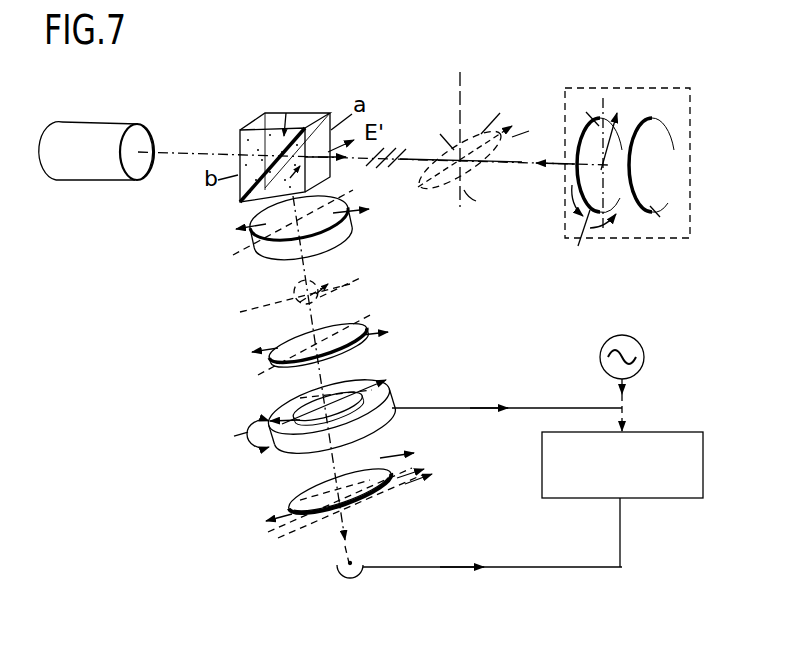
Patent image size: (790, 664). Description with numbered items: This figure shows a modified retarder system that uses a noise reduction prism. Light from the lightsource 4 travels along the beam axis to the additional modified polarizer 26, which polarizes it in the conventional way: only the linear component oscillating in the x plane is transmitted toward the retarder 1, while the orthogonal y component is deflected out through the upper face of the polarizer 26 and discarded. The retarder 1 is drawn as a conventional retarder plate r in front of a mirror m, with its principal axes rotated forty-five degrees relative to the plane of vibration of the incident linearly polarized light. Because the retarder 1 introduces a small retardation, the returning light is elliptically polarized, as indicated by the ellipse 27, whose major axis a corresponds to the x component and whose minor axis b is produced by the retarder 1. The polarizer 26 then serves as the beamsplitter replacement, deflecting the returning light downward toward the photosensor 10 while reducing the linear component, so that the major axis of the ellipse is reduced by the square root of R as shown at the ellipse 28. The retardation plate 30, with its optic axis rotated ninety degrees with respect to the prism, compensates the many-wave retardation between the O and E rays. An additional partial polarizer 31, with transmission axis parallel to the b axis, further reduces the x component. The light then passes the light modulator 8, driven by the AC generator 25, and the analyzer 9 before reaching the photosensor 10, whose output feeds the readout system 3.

The retarder 1 is at (690, 147).
The readout system 3 is at (622, 499).
The lightsource 4 is at (97, 122).
The light modulator 8 is at (284, 414).
The analyzer 9 is at (295, 490).
The photosensor 10 is at (334, 569).
The AC generator 25 is at (643, 343).
The additional modified polarizer 26 is at (286, 113).
The ellipse 27 is at (462, 136).
The ellipse with reduced major axis 28 is at (293, 290).
The retardation plate 30 is at (250, 238).
The additional partial polarizer 31 is at (272, 340).